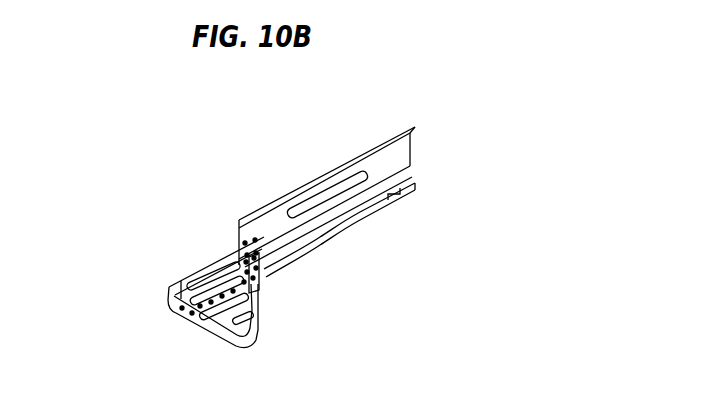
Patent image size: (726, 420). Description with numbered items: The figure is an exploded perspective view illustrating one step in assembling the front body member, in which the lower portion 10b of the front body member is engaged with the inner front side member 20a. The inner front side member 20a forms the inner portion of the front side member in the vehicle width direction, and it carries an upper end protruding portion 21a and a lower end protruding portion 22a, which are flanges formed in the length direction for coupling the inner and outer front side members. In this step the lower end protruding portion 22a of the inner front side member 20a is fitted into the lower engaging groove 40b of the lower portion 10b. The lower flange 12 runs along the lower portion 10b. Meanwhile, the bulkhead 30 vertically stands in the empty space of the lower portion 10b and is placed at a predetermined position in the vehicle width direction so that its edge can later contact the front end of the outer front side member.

The lower portion of the front body member 10b is at (215, 337).
The lower flange 12 is at (166, 286).
The inner front side member 20a is at (323, 195).
The upper end protruding portion of the inner front side member 21a is at (240, 221).
The lower end protruding portion of the inner front side member 22a is at (283, 270).
The bulkhead 30 is at (205, 246).
The lower engaging groove 40b is at (262, 290).